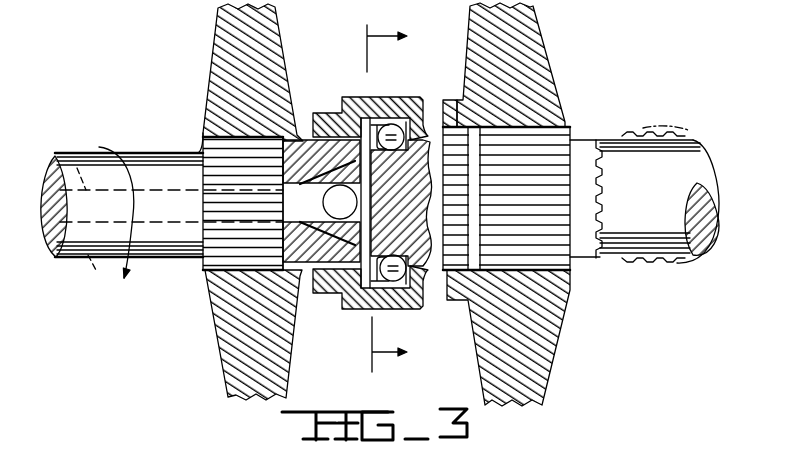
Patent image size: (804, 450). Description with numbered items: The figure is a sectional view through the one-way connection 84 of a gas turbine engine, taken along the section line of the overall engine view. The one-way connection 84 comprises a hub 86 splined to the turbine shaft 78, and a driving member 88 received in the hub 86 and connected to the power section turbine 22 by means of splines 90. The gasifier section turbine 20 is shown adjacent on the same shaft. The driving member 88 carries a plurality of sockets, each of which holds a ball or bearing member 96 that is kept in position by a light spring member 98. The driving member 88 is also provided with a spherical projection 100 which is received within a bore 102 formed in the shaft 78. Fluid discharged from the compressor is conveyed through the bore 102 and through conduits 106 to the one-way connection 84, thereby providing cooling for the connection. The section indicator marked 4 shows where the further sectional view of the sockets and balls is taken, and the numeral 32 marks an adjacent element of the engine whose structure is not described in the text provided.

The turbine 20 is at (272, 37).
The turbine 22 is at (537, 25).
The turbine shaft 78 is at (163, 172).
The one-way connection 84 is at (426, 47).
The hub 86 is at (333, 292).
The driving member 88 is at (446, 265).
The splines 90 is at (448, 102).
The ball or bearing member 96 is at (393, 122).
The light spring member 98 is at (376, 125).
The spherical projection 100 is at (344, 193).
The bore 102 is at (68, 150).
The conduits 106 is at (322, 196).
The section line 4 is at (367, 198).
The frame member 32 is at (667, 433).